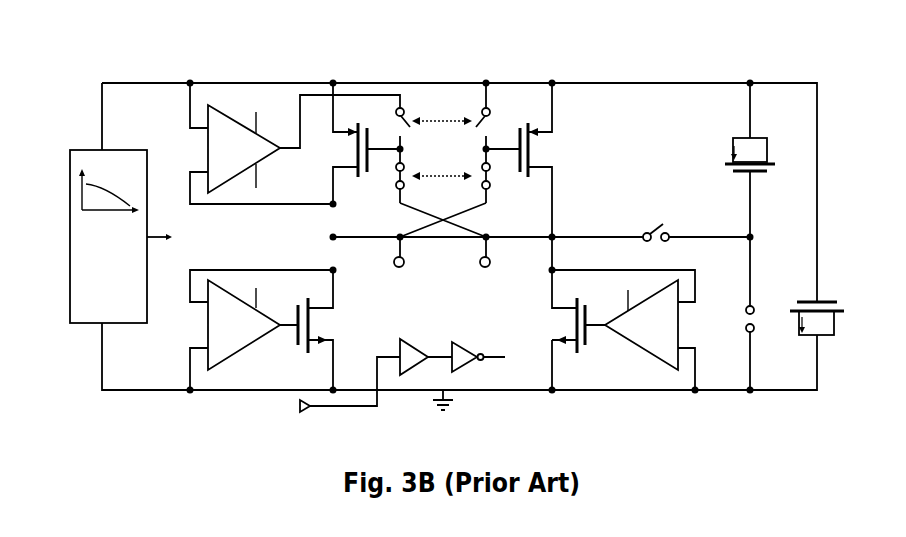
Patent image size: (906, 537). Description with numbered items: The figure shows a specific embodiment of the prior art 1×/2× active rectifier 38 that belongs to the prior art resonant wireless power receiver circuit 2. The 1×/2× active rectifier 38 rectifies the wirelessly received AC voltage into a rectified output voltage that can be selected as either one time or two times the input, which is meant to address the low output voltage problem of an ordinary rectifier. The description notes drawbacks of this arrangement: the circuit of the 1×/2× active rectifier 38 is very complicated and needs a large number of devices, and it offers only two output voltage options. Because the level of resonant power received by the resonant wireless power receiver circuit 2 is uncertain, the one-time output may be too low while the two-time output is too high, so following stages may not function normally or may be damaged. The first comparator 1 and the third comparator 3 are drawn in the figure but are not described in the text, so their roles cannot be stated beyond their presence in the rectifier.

The 1×/2× active rectifier 38 is at (155, 50).
The comparator CMP1 1 is at (244, 325).
The resonant wireless power receiver circuit 2 is at (641, 325).
The comparator CMP3 3 is at (244, 149).